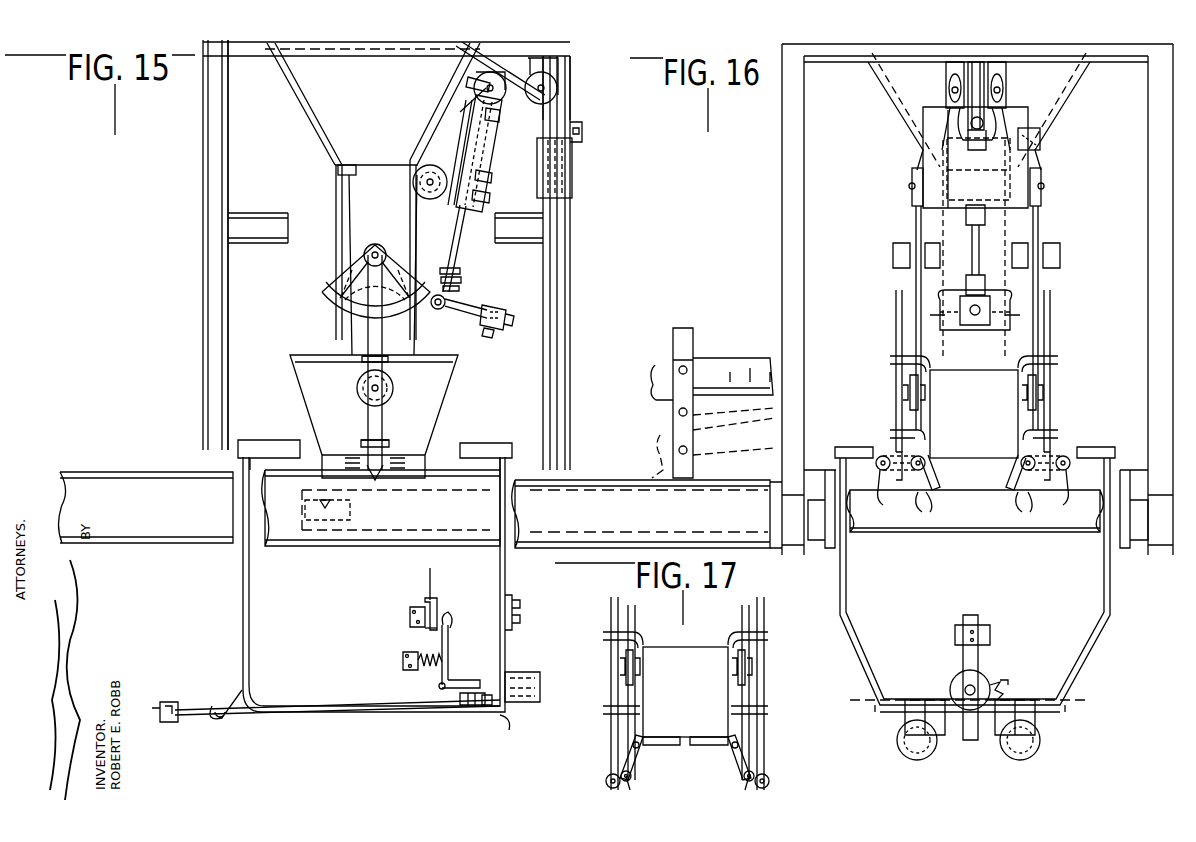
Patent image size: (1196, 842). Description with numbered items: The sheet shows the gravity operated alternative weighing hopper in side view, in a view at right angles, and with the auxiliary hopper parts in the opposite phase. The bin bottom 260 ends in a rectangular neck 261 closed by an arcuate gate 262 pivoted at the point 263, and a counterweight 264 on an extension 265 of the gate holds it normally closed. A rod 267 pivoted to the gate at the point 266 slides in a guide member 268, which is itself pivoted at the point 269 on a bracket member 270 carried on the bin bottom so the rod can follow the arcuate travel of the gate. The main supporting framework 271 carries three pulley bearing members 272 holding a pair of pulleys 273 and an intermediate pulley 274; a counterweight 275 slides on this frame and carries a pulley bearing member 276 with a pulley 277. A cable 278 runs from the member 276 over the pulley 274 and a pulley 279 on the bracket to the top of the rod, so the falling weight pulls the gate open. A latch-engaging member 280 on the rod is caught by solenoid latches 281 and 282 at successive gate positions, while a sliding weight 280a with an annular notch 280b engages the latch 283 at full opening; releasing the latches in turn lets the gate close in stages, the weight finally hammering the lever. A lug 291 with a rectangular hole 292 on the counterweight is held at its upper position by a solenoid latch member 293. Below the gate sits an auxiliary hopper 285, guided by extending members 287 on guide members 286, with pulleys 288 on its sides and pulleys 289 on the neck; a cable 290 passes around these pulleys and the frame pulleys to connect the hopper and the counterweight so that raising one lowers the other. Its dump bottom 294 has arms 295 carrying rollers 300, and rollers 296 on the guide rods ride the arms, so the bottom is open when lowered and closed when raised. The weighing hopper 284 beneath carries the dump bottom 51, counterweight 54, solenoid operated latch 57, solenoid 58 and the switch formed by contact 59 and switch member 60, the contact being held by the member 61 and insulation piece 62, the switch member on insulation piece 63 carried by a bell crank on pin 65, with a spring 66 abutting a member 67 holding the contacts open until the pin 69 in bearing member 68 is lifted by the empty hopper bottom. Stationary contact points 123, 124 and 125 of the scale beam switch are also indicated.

In FIG. 15, the dump bottom 51 is at (312, 722).
In FIG. 15, the counterweight 54 is at (170, 726).
In FIG. 15, the solenoid operated latch 57 is at (506, 722).
In FIG. 15, the solenoid 58 is at (540, 672).
In FIG. 15, the electrical contact 59 is at (440, 592).
In FIG. 15, the switch member 60 is at (455, 618).
In FIG. 15, the member 61 is at (410, 612).
In FIG. 15, the insulation piece 62 is at (425, 630).
In FIG. 15, the insulation piece 63 is at (452, 665).
In FIG. 15, the pin 65 is at (440, 692).
In FIG. 15, the spring 66 is at (425, 668).
In FIG. 15, the member 67 is at (403, 666).
In FIG. 15, the bearing member 68 is at (486, 690).
In FIG. 15, the pin 69 is at (465, 705).
In FIG. 16, the stationary contact point 123 is at (678, 448).
In FIG. 16, the stationary contact point 124 is at (678, 412).
In FIG. 16, the stationary contact point 125 is at (678, 372).
In FIG. 15, the bin bottom 260 is at (305, 93).
In FIG. 15, the rectangular neck 261 is at (335, 214).
In FIG. 15, the arcuate gate 262 is at (330, 310).
In FIG. 15, the pivot point 263 is at (378, 248).
In FIG. 15, the counterweight 264 is at (498, 310).
In FIG. 15, the extension 265 is at (466, 312).
In FIG. 15, the pivot point 266 is at (434, 308).
In FIG. 15, the rod 267 is at (462, 240).
In FIG. 15, the guide member 268 is at (497, 135).
In FIG. 15, the pivot point 269 is at (468, 83).
In FIG. 15, the bracket member 270 is at (480, 42).
In FIG. 15, the main supporting framework 271 is at (572, 66).
In FIG. 16, the pulley bearing member 272 is at (948, 70).
In FIG. 16, the pulley 273 is at (946, 105).
In FIG. 16, the pulley 274 is at (976, 62).
In FIG. 15, the counterweight 275 is at (576, 178).
In FIG. 16, the pulley bearing member 276 is at (965, 140).
In FIG. 16, the pulley 277 is at (958, 125).
In FIG. 15, the cable 278 is at (540, 56).
In FIG. 15, the pulley 279 is at (495, 72).
In FIG. 15, the latch-engaging member 280 is at (458, 205).
In FIG. 15, the weight 280a is at (462, 272).
In FIG. 15, the annular notch 280b is at (462, 282).
In FIG. 15, the solenoid-operated latch 281 is at (503, 116).
In FIG. 15, the solenoid-operated latch 282 is at (494, 176).
In FIG. 15, the solenoid-operated latch 283 is at (492, 198).
In FIG. 15, the weighing hopper 284 is at (242, 592).
In FIG. 15, the auxiliary hopper 285 is at (445, 405).
In FIG. 16, the auxiliary hopper 285 is at (960, 363).
In FIG. 17, the auxiliary hopper 285 is at (690, 645).
In FIG. 15, the guide member 286 is at (385, 348).
In FIG. 16, the guide member 286 is at (896, 338).
In FIG. 17, the guide member 286 is at (612, 687).
In FIG. 15, the extending member 287 is at (385, 365).
In FIG. 16, the extending member 287 is at (890, 360).
In FIG. 17, the extending member 287 is at (770, 634).
In FIG. 15, the pulley 288 is at (362, 398).
In FIG. 16, the pulley 288 is at (910, 392).
In FIG. 17, the pulley 288 is at (625, 665).
In FIG. 15, the pulley 289 is at (420, 166).
In FIG. 16, the pulley 289 is at (912, 180).
In FIG. 15, the cable 290 is at (445, 155).
In FIG. 16, the cable 290 is at (916, 222).
In FIG. 15, the lug 291 is at (338, 172).
In FIG. 16, the lug 291 is at (1025, 110).
In FIG. 15, the rectangular hole 292 is at (582, 118).
In FIG. 16, the solenoid latch member 293 is at (1042, 138).
In FIG. 16, the dump bottom 294 is at (1012, 470).
In FIG. 17, the dump bottom 294 is at (703, 745).
In FIG. 16, the extending arm 295 is at (898, 480).
In FIG. 16, the roller 296 is at (878, 455).
In FIG. 17, the roller 296 is at (606, 780).
In FIG. 16, the roller 300 is at (876, 470).
In FIG. 17, the roller 300 is at (688, 791).